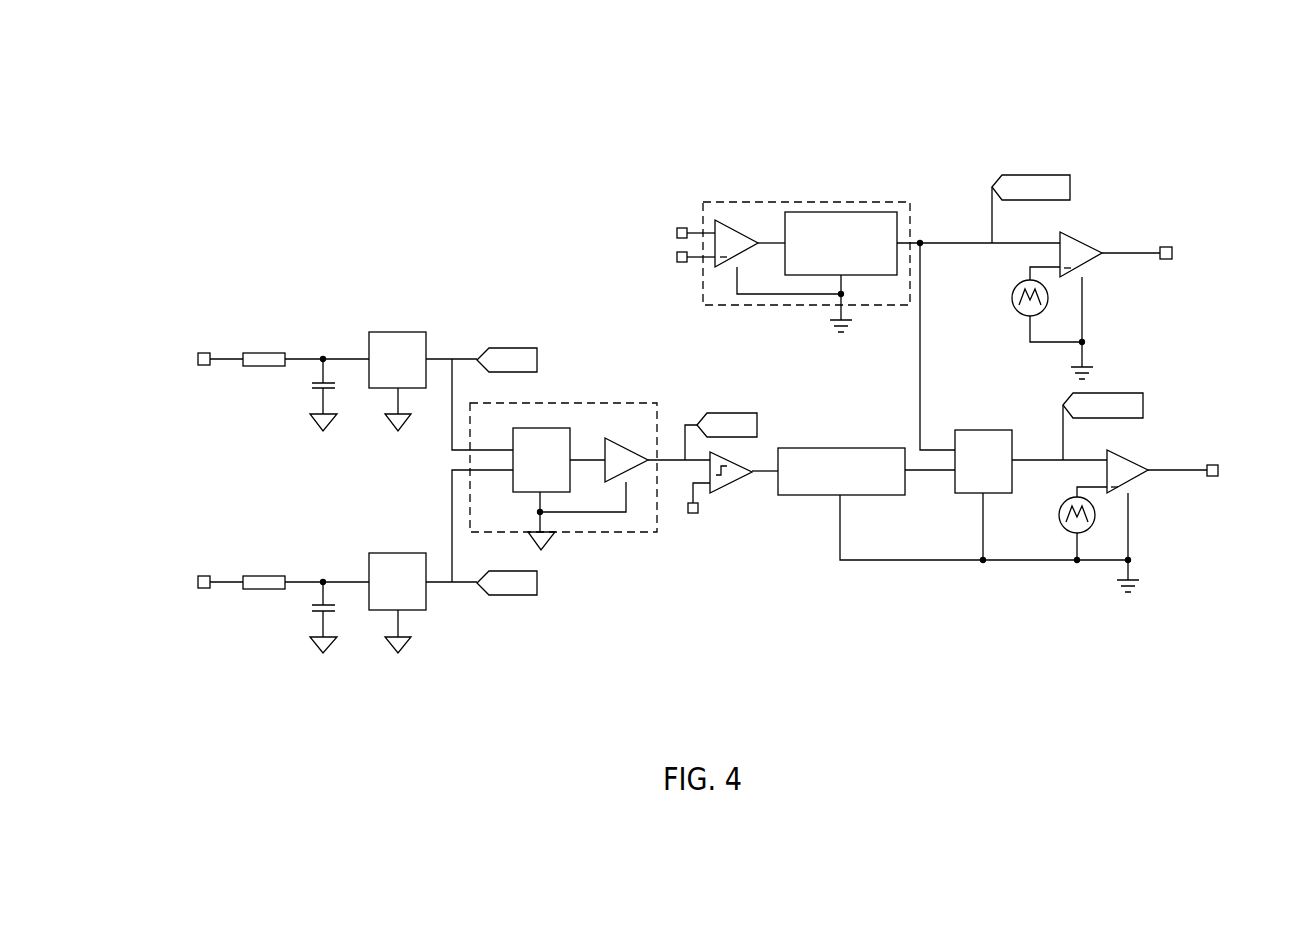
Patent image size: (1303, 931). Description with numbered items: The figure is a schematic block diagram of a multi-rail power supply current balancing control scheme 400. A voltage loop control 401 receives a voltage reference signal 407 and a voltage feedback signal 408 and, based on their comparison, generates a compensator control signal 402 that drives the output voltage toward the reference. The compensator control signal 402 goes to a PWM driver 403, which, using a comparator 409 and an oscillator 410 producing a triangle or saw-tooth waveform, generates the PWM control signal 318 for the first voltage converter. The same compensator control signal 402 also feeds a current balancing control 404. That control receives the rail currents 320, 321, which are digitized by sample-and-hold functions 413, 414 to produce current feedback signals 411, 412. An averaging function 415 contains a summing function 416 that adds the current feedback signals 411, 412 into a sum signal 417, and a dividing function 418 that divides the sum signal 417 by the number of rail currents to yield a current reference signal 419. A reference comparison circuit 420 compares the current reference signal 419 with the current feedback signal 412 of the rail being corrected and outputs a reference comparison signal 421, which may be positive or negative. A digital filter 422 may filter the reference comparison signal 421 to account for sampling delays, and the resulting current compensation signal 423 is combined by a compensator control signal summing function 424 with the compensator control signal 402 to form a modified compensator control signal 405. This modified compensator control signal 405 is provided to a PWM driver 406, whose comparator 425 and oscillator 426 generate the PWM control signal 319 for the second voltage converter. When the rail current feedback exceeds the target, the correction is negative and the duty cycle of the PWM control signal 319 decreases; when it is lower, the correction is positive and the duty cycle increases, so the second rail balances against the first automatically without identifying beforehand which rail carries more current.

The multi-rail power supply current balancing control scheme 400 is at (491, 101).
The voltage loop control 401 is at (737, 202).
The compensator control signal 402 is at (977, 242).
The PWM driver 403 is at (1134, 216).
The current balancing control 404 is at (491, 276).
The modified compensator control signal 405 is at (1047, 447).
The PWM driver 406 is at (1174, 460).
The voltage reference signal 407 is at (693, 230).
The voltage feedback signal 408 is at (693, 263).
The comparator 409 is at (1093, 262).
The oscillator 410 is at (1025, 283).
The current feedback signal 411 is at (463, 358).
The current feedback signal 412 is at (458, 585).
The sample-and-hold function 413 is at (388, 332).
The sample-and-hold function 414 is at (388, 553).
The averaging function 415 is at (618, 403).
The summing function 416 is at (538, 428).
The sum signal 417 is at (587, 458).
The dividing function 418 is at (627, 448).
The current reference signal 419 is at (673, 454).
The reference comparison circuit 420 is at (742, 477).
The reference comparison signal 421 is at (763, 468).
The digital filter 422 is at (873, 448).
The current compensation signal 423 is at (915, 475).
The compensator control signal summing function 424 is at (983, 430).
The comparator 425 is at (1135, 480).
The oscillator 426 is at (1068, 502).
The PWM control signal 318 is at (1133, 255).
The PWM control signal 319 is at (1170, 475).
The rail current 320 is at (200, 307).
The rail current 321 is at (200, 535).